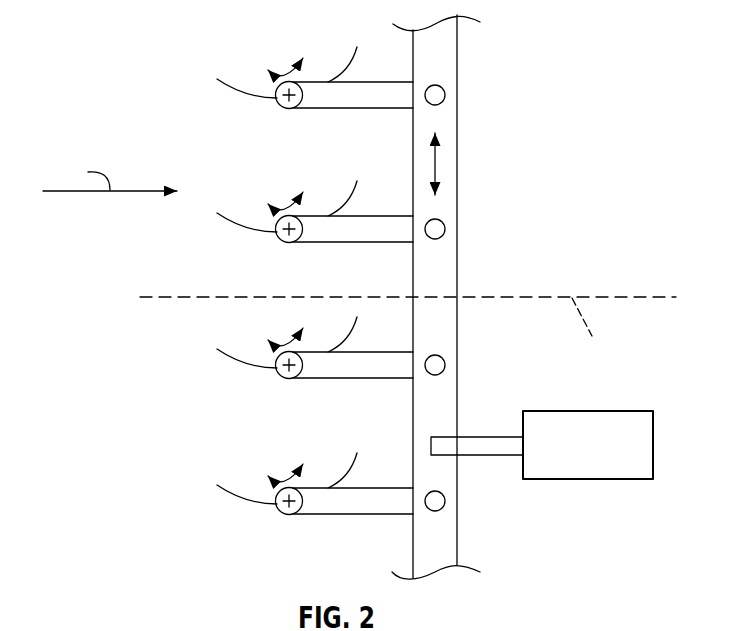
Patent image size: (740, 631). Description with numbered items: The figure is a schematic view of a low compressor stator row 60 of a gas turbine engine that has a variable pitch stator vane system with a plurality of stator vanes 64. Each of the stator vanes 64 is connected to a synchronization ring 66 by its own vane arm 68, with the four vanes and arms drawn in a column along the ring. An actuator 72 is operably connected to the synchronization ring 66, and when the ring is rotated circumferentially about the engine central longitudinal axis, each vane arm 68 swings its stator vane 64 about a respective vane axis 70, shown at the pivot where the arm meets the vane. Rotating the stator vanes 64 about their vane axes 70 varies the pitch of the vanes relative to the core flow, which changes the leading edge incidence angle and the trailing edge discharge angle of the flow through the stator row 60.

The low compressor stator row 60 is at (86, 44).
The stator vane 64 is at (228, 86).
The synchronization ring 66 is at (442, 265).
The vane arm 68 is at (352, 98).
The vane axis 70 is at (287, 108).
The actuator 72 is at (603, 457).